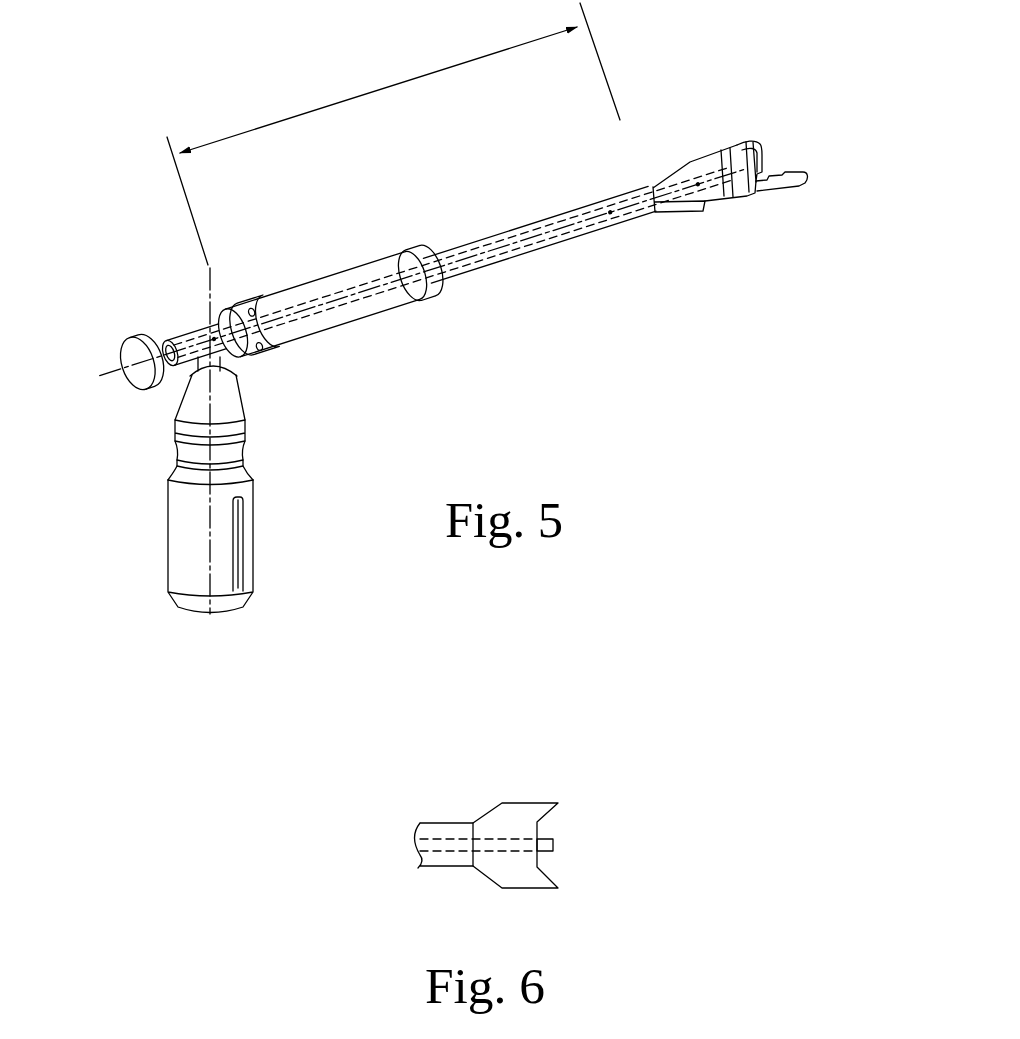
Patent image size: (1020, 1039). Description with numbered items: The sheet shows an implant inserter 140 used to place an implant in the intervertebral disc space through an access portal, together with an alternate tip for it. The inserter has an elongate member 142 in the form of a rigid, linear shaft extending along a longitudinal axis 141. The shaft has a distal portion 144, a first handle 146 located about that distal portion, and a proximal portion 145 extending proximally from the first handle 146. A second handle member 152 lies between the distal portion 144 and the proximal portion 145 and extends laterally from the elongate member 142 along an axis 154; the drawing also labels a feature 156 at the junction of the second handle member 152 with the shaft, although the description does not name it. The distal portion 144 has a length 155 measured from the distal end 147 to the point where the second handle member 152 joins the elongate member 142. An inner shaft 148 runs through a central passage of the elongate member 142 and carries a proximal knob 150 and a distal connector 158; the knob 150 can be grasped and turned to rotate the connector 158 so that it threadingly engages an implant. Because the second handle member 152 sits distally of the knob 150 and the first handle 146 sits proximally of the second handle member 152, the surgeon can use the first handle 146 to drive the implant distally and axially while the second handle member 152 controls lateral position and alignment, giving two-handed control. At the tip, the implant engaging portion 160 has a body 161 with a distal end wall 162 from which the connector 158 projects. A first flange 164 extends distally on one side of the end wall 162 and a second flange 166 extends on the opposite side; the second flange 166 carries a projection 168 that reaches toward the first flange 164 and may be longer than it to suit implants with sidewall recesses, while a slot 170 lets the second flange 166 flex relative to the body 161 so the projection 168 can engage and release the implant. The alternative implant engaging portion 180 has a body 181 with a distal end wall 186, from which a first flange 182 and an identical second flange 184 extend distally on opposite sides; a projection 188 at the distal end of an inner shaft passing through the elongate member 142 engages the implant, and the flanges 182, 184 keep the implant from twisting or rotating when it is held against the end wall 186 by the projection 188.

In FIG. 5, the implant inserter 140 is at (382, 190).
In FIG. 5, the longitudinal axis 141 is at (507, 242).
In FIG. 5, the elongate member 142 is at (452, 283).
In FIG. 6, the elongate member 142 is at (429, 819).
In FIG. 5, the distal portion 144 is at (573, 240).
In FIG. 5, the proximal portion 145 is at (181, 330).
In FIG. 5, the first handle 146 is at (333, 330).
In FIG. 5, the distal end 147 is at (660, 185).
In FIG. 5, the inner shaft 148 is at (352, 290).
In FIG. 5, the proximal knob 150 is at (130, 374).
In FIG. 5, the second handle member 152 is at (253, 498).
In FIG. 5, the axis 154 is at (210, 513).
In FIG. 5, the length 155 is at (393, 134).
In FIG. 5, the handle neck connector 156 is at (228, 357).
In FIG. 5, the distal connector 158 is at (760, 165).
In FIG. 5, the implant engaging portion 160 is at (735, 204).
In FIG. 5, the body 161 is at (703, 162).
In FIG. 5, the distal end wall 162 is at (762, 152).
In FIG. 5, the first flange 164 is at (755, 143).
In FIG. 5, the second flange 166 is at (801, 175).
In FIG. 5, the projection 168 is at (777, 177).
In FIG. 5, the slot 170 is at (754, 186).
In FIG. 6, the implant engaging portion 180 is at (592, 739).
In FIG. 6, the body 181 is at (514, 818).
In FIG. 6, the first flange 182 is at (560, 803).
In FIG. 6, the second flange 184 is at (562, 888).
In FIG. 6, the distal end wall 186 is at (560, 822).
In FIG. 6, the projection 188 is at (554, 846).